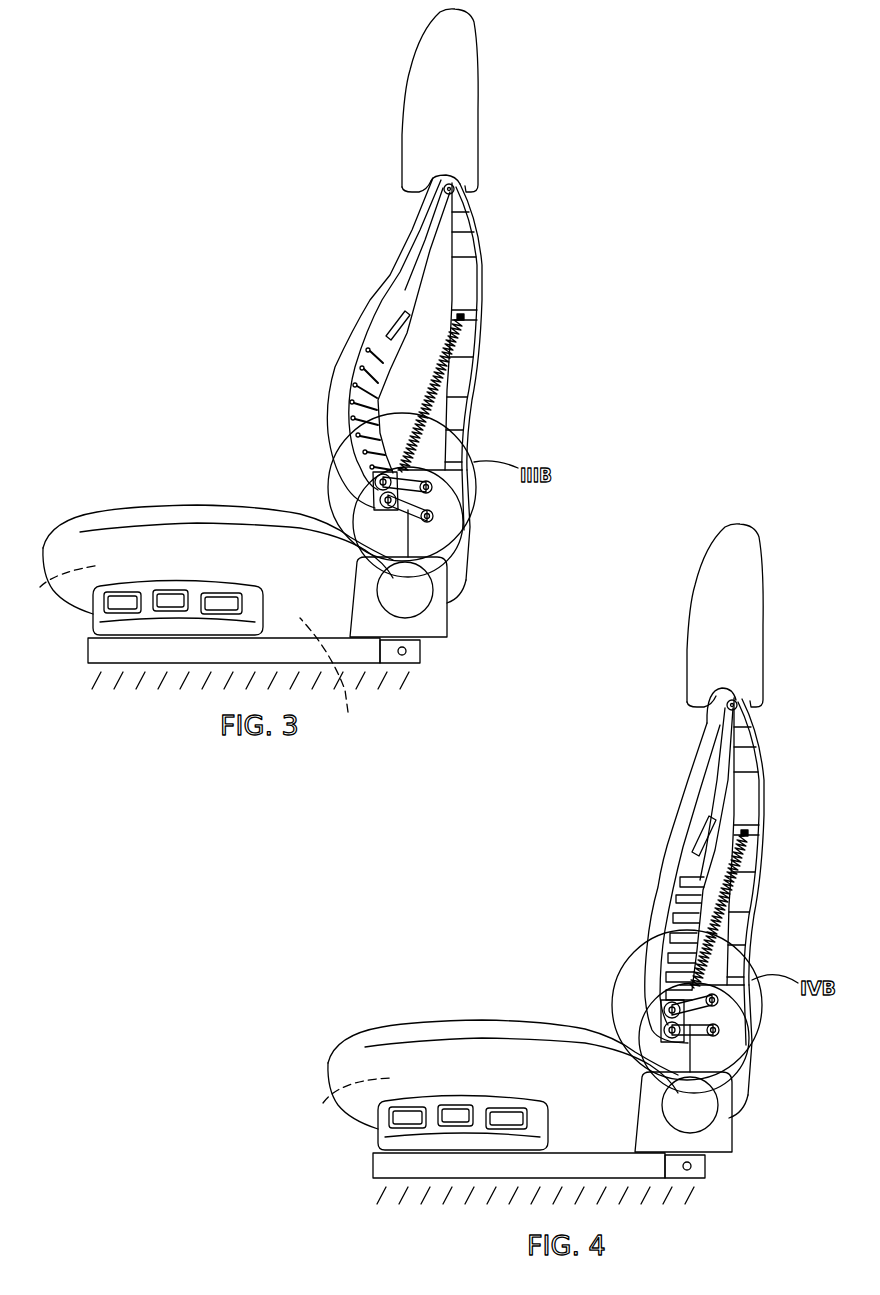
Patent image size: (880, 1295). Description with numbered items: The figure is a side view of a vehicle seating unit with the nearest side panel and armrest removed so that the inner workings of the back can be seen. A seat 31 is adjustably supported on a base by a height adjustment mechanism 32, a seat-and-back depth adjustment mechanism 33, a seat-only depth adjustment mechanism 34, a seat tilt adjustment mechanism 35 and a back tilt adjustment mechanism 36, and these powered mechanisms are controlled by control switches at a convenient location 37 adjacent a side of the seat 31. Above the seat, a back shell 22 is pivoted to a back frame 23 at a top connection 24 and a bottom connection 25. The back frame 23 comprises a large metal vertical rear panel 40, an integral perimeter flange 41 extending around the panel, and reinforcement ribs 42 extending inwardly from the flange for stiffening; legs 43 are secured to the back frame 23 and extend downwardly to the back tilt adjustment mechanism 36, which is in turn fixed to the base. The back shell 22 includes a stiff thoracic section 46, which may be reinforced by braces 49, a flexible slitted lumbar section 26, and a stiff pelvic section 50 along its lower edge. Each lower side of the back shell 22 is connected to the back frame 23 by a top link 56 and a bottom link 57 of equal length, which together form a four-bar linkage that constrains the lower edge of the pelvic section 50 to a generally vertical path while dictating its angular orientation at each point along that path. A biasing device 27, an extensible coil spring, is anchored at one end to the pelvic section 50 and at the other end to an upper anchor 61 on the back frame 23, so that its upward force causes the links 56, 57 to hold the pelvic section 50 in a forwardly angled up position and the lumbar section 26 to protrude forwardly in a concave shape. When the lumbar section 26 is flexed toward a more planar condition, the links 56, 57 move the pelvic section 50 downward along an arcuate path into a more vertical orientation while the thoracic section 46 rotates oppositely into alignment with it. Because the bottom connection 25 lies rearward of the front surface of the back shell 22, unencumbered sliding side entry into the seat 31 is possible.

In FIG. 3, the back shell 22 is at (428, 287).
In FIG. 4, the back shell 22 is at (738, 810).
In FIG. 3, the back frame 23 is at (484, 212).
In FIG. 4, the back frame 23 is at (766, 722).
In FIG. 3, the top connection 24 is at (456, 186).
In FIG. 4, the top connection 24 is at (740, 700).
In FIG. 3, the bottom connection 25 is at (470, 516).
In FIG. 4, the bottom connection 25 is at (765, 1030).
In FIG. 3, the lumbar section 26 is at (393, 396).
In FIG. 4, the lumbar section 26 is at (705, 928).
In FIG. 3, the biasing device 27 is at (457, 363).
In FIG. 4, the biasing device 27 is at (742, 870).
In FIG. 3, the seat 31 is at (122, 512).
In FIG. 4, the seat 31 is at (408, 1023).
In FIG. 3, the height adjustment mechanism 32 is at (342, 680).
In FIG. 3, the seat-and-back depth adjustment mechanism 33 is at (98, 660).
In FIG. 4, the seat-and-back depth adjustment mechanism 33 is at (387, 1170).
In FIG. 3, the seat-only depth adjustment mechanism 34 is at (342, 680).
In FIG. 3, the seat tilt adjustment mechanism 35 is at (57, 590).
In FIG. 4, the seat tilt adjustment mechanism 35 is at (344, 1101).
In FIG. 3, the back tilt adjustment mechanism 36 is at (432, 585).
In FIG. 4, the back tilt adjustment mechanism 36 is at (722, 1097).
In FIG. 3, the control switch location 37 is at (197, 583).
In FIG. 4, the control switch location 37 is at (480, 1097).
In FIG. 3, the rear panel 40 is at (475, 232).
In FIG. 4, the rear panel 40 is at (760, 743).
In FIG. 3, the perimeter flange 41 is at (468, 278).
In FIG. 4, the perimeter flange 41 is at (753, 788).
In FIG. 3, the reinforcement ribs 42 is at (452, 213).
In FIG. 4, the reinforcement ribs 42 is at (738, 728).
In FIG. 3, the legs 43 is at (457, 567).
In FIG. 4, the legs 43 is at (752, 1080).
In FIG. 3, the thoracic section 46 is at (448, 258).
In FIG. 4, the thoracic section 46 is at (737, 777).
In FIG. 3, the braces 49 is at (405, 300).
In FIG. 4, the braces 49 is at (700, 842).
In FIG. 3, the pelvic section 50 is at (378, 502).
In FIG. 4, the pelvic section 50 is at (663, 1022).
In FIG. 3, the top link 56 is at (420, 470).
In FIG. 4, the top link 56 is at (722, 1010).
In FIG. 3, the bottom link 57 is at (440, 508).
In FIG. 4, the bottom link 57 is at (705, 1037).
In FIG. 3, the spring anchor 61 is at (462, 322).
In FIG. 4, the spring anchor 61 is at (745, 833).